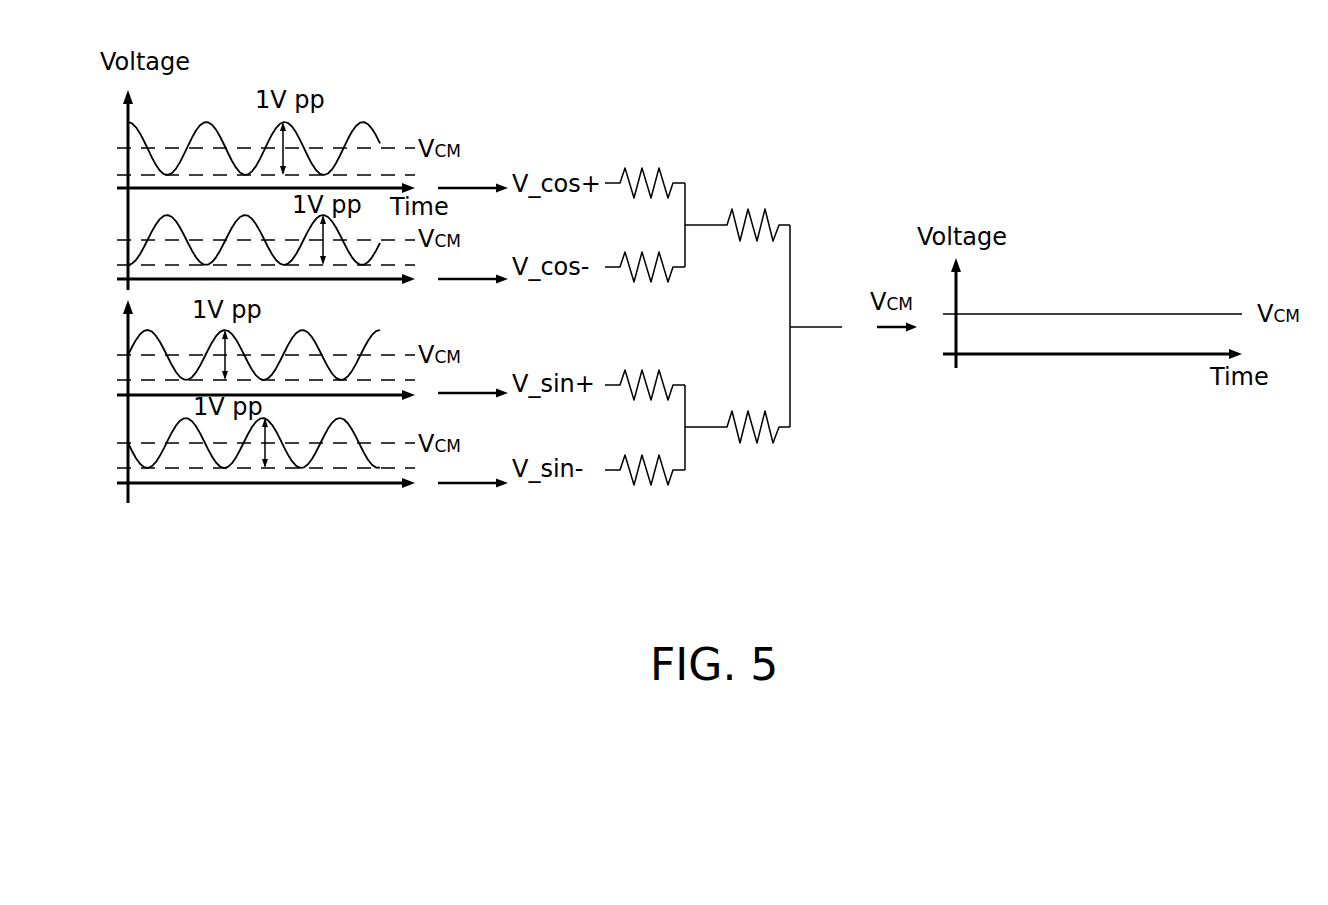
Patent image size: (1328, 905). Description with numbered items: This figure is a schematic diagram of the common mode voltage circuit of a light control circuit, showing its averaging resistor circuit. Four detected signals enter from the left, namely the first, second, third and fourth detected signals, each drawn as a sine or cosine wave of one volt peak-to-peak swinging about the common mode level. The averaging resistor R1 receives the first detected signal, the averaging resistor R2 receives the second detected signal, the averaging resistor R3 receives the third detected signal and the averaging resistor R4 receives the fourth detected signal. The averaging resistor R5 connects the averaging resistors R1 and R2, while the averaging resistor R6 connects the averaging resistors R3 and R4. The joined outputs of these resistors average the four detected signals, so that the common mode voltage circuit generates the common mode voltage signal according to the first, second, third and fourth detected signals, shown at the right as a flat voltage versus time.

The averaging resistor R1 is at (645, 455).
The averaging resistor R2 is at (645, 370).
The averaging resistor R3 is at (645, 251).
The averaging resistor R4 is at (645, 167).
The averaging resistor R5 is at (737, 411).
The averaging resistor R6 is at (737, 209).